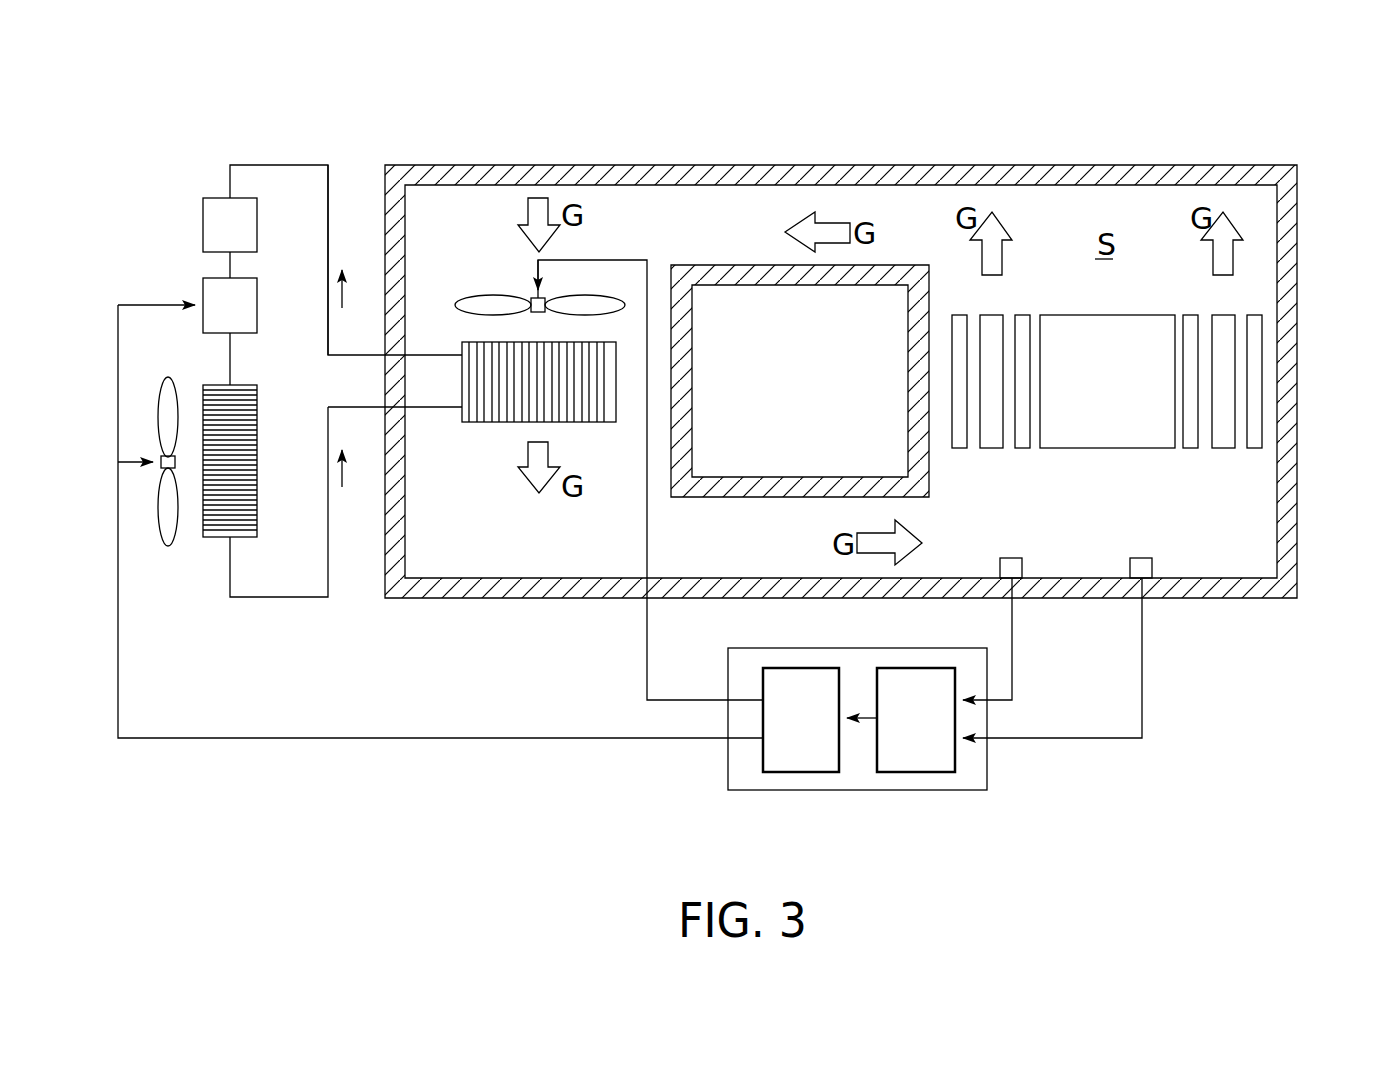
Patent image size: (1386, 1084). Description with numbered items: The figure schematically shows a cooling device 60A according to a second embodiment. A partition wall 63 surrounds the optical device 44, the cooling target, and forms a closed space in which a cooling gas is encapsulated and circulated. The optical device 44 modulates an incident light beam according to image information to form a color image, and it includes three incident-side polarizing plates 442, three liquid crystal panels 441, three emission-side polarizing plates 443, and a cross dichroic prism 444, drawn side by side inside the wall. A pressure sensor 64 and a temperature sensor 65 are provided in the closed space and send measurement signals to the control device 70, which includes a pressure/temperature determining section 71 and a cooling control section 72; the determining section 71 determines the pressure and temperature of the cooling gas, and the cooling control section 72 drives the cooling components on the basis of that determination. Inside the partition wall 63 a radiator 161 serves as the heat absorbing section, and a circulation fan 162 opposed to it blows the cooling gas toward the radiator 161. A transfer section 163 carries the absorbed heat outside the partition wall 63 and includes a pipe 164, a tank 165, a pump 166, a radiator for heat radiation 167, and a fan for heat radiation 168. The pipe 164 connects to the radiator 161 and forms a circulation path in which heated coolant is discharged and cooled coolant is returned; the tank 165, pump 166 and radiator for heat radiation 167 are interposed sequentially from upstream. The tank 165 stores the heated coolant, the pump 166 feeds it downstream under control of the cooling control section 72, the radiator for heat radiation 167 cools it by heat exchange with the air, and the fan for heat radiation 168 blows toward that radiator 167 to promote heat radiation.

The cooling device 60A is at (1195, 125).
The partition wall 63 is at (1290, 385).
The optical device 44 is at (1106, 444).
The liquid crystal panel 441 is at (990, 432).
The incident-side polarizing plate 442 is at (960, 440).
The emission-side polarizing plate 443 is at (1025, 440).
The cross dichroic prism 444 is at (1088, 432).
The pressure sensor 64 is at (1025, 565).
The temperature sensor 65 is at (1152, 565).
The control device 70 is at (857, 760).
The pressure/temperature determining section 71 is at (917, 745).
The cooling control section 72 is at (800, 745).
The radiator 161 is at (492, 444).
The circulation fan 162 is at (489, 278).
The transfer section 163 is at (185, 152).
The pipe 164 is at (296, 155).
The tank 165 is at (212, 212).
The pump 166 is at (212, 297).
The radiator for heat radiation 167 is at (209, 550).
The fan for heat radiation 168 is at (164, 556).